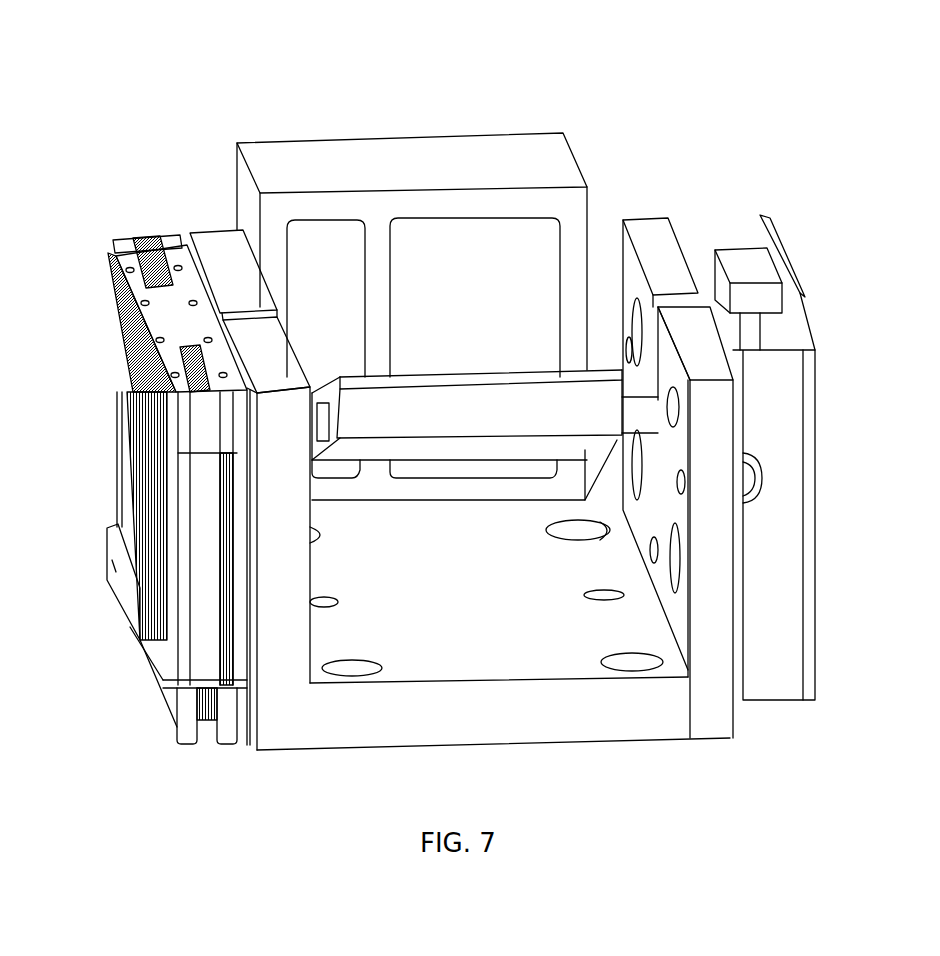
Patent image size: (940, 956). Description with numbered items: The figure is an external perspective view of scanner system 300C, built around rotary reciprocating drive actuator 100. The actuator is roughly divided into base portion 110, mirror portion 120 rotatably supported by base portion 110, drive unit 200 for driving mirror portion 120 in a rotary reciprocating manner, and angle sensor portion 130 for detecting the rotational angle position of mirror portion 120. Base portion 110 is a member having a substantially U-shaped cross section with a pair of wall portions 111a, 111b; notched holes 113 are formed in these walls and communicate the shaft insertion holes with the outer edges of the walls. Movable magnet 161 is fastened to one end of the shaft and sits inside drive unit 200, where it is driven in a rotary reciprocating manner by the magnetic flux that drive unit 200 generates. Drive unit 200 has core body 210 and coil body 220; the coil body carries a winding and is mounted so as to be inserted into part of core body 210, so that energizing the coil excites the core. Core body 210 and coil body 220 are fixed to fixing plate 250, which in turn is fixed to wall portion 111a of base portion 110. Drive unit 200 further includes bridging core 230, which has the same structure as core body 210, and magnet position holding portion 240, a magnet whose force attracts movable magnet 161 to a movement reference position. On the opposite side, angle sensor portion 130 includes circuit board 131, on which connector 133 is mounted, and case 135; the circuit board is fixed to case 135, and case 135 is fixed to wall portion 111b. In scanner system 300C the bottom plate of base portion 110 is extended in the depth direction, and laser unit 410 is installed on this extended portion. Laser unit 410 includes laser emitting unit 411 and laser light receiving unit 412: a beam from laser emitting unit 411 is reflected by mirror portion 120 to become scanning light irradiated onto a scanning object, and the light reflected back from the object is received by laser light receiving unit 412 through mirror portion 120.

The rotary reciprocating drive actuator 100 is at (185, 130).
The base portion 110 is at (538, 708).
The wall portion 111a is at (280, 645).
The wall portion 111b is at (722, 645).
The notched hole 113 is at (667, 293).
The mirror portion 120 is at (596, 397).
The angle sensor portion 130 is at (778, 403).
The circuit board 131 is at (782, 248).
The connector 133 is at (730, 258).
The case 135 is at (807, 513).
The movable magnet 161 is at (125, 452).
The drive unit 200 is at (130, 680).
The core body 210 is at (120, 593).
The coil body 220 is at (125, 418).
The bridging core 230 is at (128, 253).
The magnet position holding portion 240 is at (130, 370).
The fixing plate 250 is at (250, 730).
The scanner system 300C is at (835, 104).
The laser unit 410 is at (397, 158).
The laser emitting unit 411 is at (322, 247).
The laser light receiving unit 412 is at (498, 253).